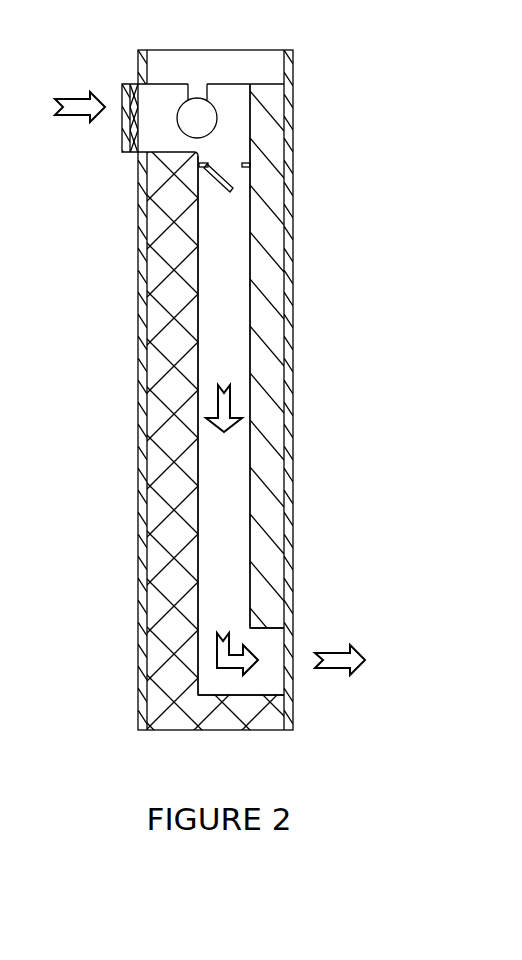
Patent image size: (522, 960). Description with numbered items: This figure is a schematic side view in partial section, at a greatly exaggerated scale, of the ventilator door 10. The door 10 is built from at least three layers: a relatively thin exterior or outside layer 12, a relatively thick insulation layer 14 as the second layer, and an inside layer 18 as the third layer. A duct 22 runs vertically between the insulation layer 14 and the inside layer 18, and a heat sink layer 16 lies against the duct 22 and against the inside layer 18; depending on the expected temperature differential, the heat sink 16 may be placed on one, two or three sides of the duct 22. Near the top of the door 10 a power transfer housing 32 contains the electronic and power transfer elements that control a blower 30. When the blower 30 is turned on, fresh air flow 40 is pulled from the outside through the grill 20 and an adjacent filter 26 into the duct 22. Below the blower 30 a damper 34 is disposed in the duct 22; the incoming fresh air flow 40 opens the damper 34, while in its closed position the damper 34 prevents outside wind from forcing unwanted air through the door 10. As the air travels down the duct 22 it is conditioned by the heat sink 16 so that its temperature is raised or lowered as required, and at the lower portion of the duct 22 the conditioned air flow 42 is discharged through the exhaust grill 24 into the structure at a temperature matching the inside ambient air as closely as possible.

The ventilator door 10 is at (291, 42).
The outside layer 12 is at (143, 265).
The insulation layer 14 is at (155, 317).
The heat sink layer 16 is at (267, 233).
The inside layer 18 is at (288, 310).
The grill 20 is at (122, 142).
The duct 22 is at (213, 262).
The discharge grill 24 is at (293, 648).
The filter 26 is at (137, 83).
The blower 30 is at (217, 113).
The power transfer housing 32 is at (172, 49).
The damper 34 is at (215, 168).
The fresh air flow 40 is at (70, 97).
The discharged air flow 42 is at (325, 670).